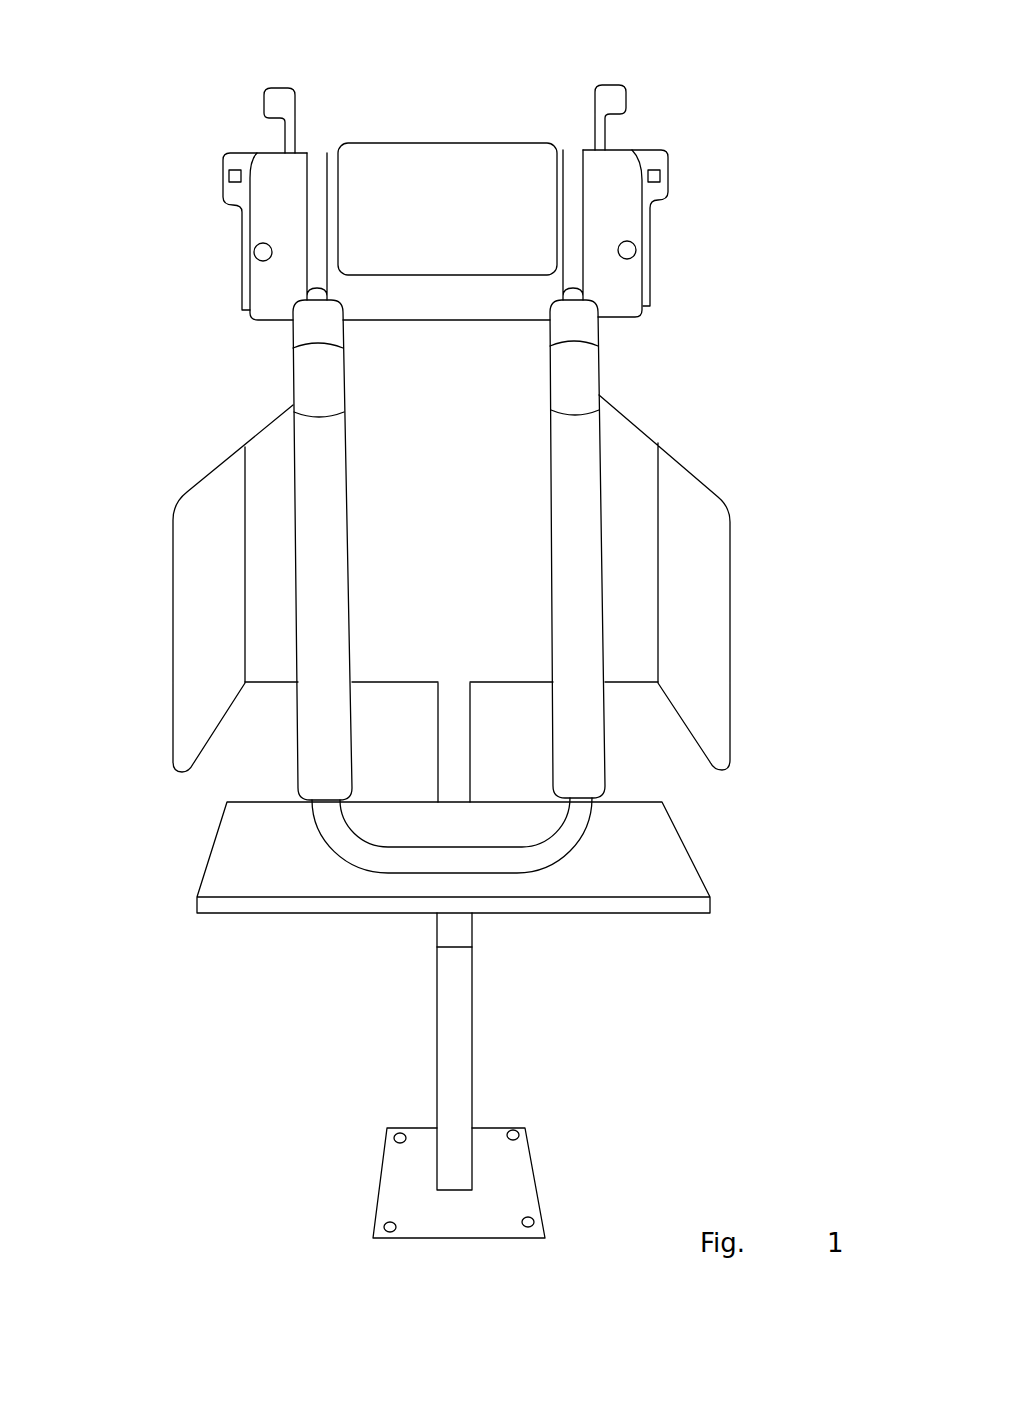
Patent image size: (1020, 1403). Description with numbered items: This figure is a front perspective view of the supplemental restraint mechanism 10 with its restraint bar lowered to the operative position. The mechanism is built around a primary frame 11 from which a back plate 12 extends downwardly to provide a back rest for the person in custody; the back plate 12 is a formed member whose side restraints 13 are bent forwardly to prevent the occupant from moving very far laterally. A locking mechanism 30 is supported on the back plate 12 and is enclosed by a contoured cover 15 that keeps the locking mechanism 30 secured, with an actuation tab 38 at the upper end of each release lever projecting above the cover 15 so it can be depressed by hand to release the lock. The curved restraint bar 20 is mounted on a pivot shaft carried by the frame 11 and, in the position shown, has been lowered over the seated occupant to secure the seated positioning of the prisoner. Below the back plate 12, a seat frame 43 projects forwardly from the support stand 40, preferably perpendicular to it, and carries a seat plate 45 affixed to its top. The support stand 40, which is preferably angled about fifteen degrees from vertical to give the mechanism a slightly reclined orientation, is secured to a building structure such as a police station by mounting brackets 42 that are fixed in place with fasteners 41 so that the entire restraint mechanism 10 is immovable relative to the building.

The supplemental restraint mechanism 10 is at (170, 128).
The primary frame 11 is at (640, 152).
The back plate 12 is at (487, 370).
The side restraints 13 is at (195, 523).
The contoured cover 15 is at (390, 155).
The curved restraint bar 20 is at (587, 752).
The locking mechanism 30 is at (672, 236).
The actuation tab 38 is at (287, 105).
The support stand 40 is at (455, 711).
The fasteners 41 is at (537, 1213).
The mounting brackets 42 is at (402, 1179).
The seat frame 43 is at (450, 932).
The seat plate 45 is at (648, 853).